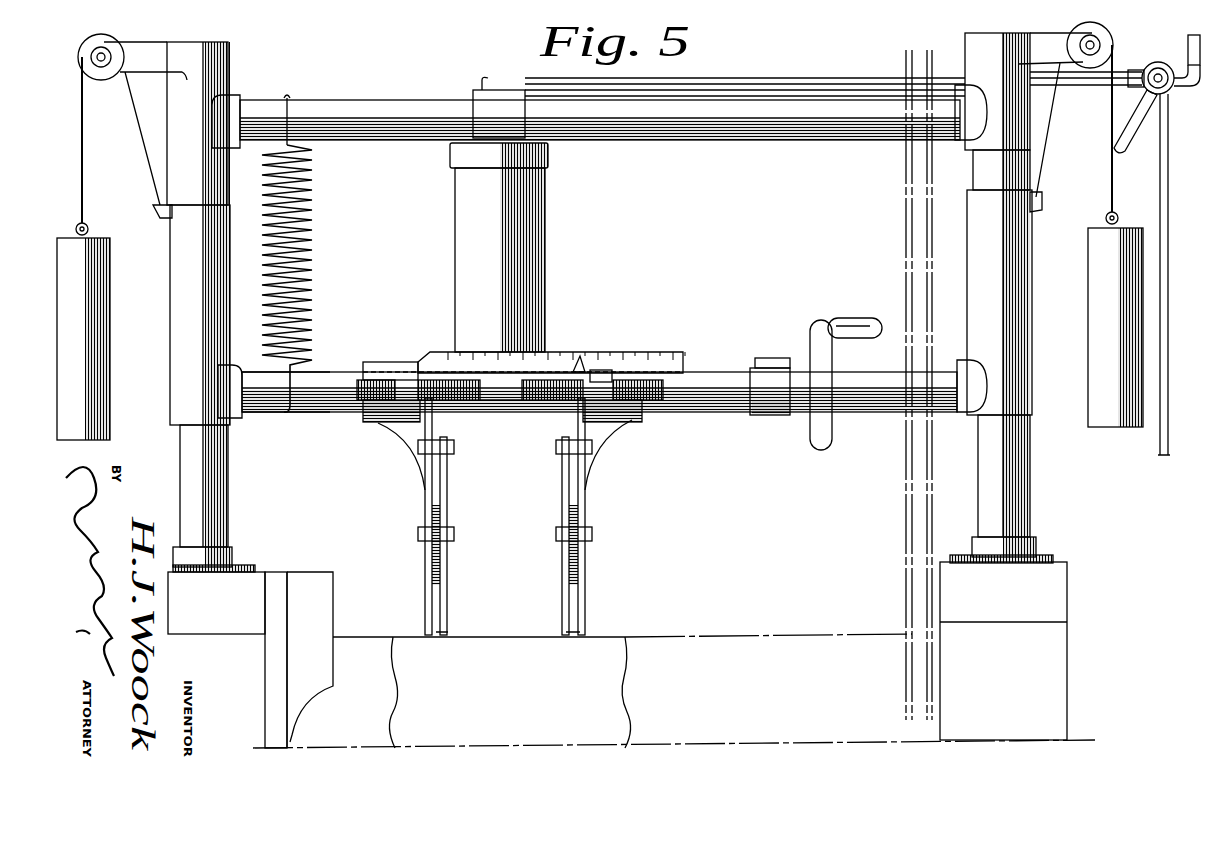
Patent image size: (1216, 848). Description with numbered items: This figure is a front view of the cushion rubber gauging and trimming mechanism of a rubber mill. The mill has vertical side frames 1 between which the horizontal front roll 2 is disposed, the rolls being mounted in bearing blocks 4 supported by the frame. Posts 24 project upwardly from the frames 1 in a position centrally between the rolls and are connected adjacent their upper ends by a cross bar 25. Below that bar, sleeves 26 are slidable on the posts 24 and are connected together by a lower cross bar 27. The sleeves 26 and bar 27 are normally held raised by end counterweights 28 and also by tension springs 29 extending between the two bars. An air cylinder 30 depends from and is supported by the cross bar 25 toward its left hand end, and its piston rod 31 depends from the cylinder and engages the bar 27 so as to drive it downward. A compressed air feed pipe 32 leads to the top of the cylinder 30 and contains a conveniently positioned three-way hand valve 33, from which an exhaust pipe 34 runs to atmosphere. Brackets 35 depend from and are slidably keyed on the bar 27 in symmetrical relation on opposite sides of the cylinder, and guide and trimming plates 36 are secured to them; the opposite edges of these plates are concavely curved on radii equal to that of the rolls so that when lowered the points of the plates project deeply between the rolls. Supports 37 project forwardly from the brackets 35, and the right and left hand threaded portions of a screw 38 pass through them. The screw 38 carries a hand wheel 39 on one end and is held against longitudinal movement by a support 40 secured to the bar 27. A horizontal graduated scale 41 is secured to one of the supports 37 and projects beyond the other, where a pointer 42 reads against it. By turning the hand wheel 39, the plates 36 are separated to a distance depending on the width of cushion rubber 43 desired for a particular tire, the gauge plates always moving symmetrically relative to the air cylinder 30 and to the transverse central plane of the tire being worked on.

The vertical side frames 1 is at (228, 590).
The front roll 2 is at (715, 655).
The bearing blocks 4 is at (276, 578).
The posts 24 is at (216, 482).
The cross bar 25 is at (658, 128).
The sleeves 26 is at (178, 300).
The cross bar 27 is at (318, 402).
The end counterweights 28 is at (108, 277).
The tension springs 29 is at (312, 244).
The air cylinder 30 is at (470, 260).
The piston rod 31 is at (492, 388).
The compressed air feed pipe 32 is at (828, 80).
The three-way hand valve 33 is at (1168, 92).
The exhaust pipe 34 is at (1190, 52).
The brackets 35 is at (428, 484).
The guide and trimming plates 36 is at (577, 618).
The supports 37 is at (408, 388).
The screw 38 is at (693, 390).
The hand wheel 39 is at (818, 432).
The support 40 is at (775, 378).
The horizontal graduated scale 41 is at (552, 348).
The pointer 42 is at (581, 355).
The cushion rubber 43 is at (592, 660).